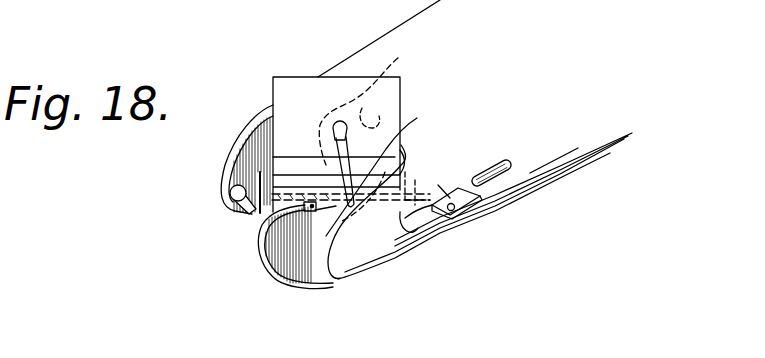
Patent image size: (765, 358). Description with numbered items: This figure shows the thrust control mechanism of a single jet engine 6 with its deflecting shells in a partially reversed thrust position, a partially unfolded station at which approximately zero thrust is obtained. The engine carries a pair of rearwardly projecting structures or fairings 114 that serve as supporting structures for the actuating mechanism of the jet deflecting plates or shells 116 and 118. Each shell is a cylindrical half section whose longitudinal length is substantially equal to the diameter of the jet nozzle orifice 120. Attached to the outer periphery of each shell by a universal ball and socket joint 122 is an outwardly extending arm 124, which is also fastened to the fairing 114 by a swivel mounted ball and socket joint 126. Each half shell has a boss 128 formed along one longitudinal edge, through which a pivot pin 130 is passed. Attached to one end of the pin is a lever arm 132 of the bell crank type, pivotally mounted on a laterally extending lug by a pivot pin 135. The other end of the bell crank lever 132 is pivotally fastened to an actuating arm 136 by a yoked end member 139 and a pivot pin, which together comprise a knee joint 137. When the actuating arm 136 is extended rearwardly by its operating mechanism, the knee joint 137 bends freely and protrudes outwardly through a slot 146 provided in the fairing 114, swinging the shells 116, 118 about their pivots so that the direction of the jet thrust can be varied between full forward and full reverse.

The single jet engine 6 is at (557, 124).
The rearwardly projecting structure or fairing 114 is at (252, 136).
The jet deflecting plate or shell 116 is at (324, 273).
The jet deflecting plate or shell 118 is at (350, 90).
The jet nozzle orifice 120 is at (397, 59).
The universal ball and socket joint 122 is at (334, 120).
The outwardly extending arm 124 is at (343, 174).
The swivel mounted ball and socket joint 126 is at (239, 207).
The boss 128 is at (288, 195).
The pivot pin 130 is at (258, 234).
The lever arm 132 is at (444, 218).
The pivot pin 135 is at (405, 173).
The actuating arm 136 is at (496, 197).
The knee joint 137 is at (473, 221).
The yoked end member 139 is at (489, 215).
The slot 146 is at (446, 197).